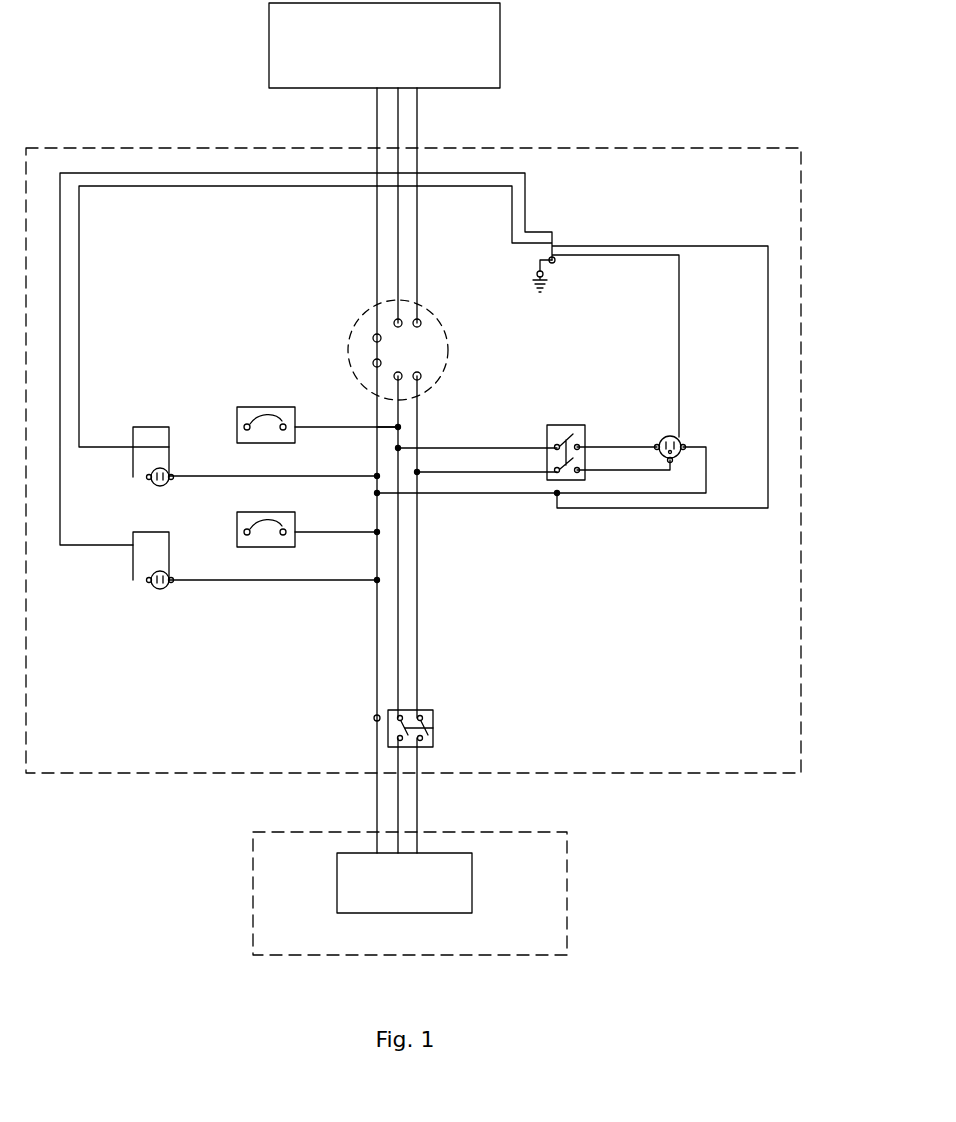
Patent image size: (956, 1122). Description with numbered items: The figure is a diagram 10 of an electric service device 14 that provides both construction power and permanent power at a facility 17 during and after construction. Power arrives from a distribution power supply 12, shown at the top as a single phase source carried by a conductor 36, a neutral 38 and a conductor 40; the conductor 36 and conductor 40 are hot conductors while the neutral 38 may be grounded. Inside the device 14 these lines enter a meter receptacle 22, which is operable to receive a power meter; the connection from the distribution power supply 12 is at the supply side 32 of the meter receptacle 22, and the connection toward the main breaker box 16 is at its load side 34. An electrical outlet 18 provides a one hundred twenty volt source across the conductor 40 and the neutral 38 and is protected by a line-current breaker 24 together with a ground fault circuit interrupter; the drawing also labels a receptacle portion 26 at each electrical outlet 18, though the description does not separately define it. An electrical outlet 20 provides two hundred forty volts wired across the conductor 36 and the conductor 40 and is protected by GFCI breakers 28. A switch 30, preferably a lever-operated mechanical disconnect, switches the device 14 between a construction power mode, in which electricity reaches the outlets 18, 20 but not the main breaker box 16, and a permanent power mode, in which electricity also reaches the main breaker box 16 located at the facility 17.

The diagram 10 is at (118, 92).
The distribution power supply 12 is at (480, 45).
The electric service device 14 is at (641, 147).
The main breaker box 16 is at (337, 885).
The facility 17 is at (567, 885).
The electrical outlet 18 is at (152, 485).
The electrical outlet 20 is at (663, 438).
The meter receptacle 22 is at (448, 350).
The line-current breaker 24 is at (260, 407).
The outlet 26 is at (172, 471).
The GFCI breakers 28 is at (562, 425).
The switch 30 is at (433, 715).
The supply side 32 is at (406, 300).
The load side 34 is at (418, 397).
The conductor 36 is at (398, 125).
The neutral 38 is at (377, 136).
The conductor 40 is at (417, 112).